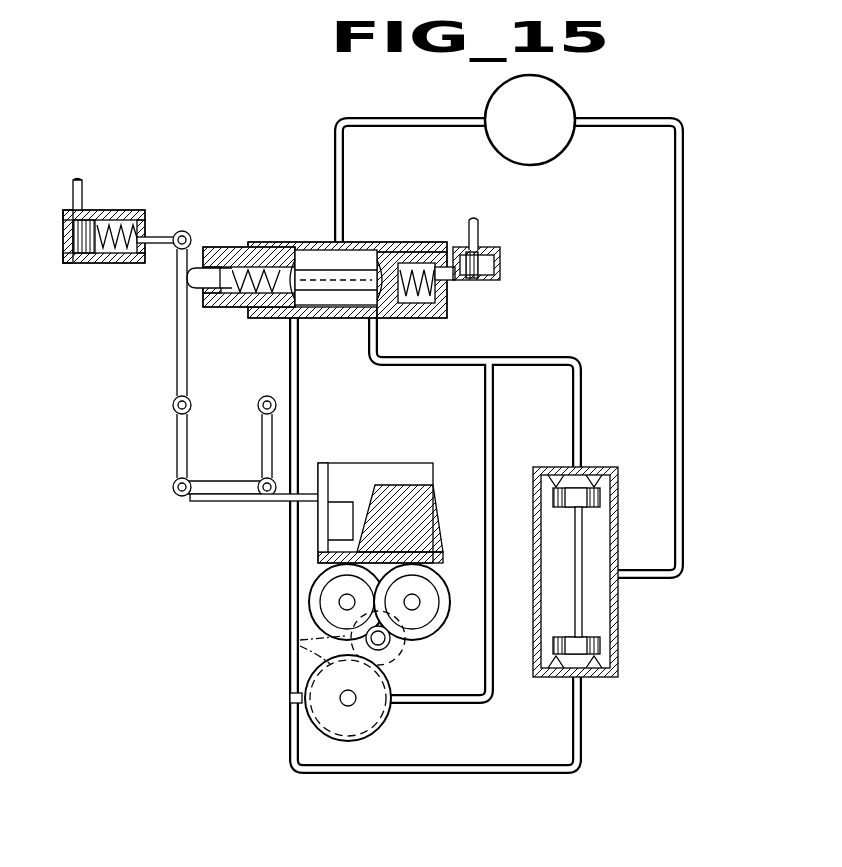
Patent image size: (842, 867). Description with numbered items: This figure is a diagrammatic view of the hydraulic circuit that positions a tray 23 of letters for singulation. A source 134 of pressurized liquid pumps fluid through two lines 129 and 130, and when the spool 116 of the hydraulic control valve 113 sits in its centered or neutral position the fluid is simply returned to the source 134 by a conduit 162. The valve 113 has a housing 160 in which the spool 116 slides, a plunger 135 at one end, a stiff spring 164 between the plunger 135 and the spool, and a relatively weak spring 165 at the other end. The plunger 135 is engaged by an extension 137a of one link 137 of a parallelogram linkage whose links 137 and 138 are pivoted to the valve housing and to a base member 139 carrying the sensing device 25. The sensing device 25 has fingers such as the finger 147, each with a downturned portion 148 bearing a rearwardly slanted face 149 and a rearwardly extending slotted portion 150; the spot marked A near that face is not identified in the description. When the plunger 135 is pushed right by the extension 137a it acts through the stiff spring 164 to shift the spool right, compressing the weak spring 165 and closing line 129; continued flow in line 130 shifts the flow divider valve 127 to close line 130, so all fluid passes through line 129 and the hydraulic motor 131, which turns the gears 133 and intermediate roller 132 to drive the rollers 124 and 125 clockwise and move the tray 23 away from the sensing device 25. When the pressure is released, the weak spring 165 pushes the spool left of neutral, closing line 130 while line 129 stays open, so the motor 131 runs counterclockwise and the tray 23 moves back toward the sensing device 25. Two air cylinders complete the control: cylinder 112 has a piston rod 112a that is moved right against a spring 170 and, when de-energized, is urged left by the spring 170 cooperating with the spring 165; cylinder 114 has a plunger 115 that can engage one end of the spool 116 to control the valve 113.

The conduit 162 is at (378, 117).
The source of pressurized liquid 134 is at (550, 128).
The air cylinder 112 is at (106, 212).
The piston rod 112a is at (164, 235).
The spring 170 is at (114, 252).
The link extension 137a is at (180, 326).
The hydraulic control valve 113 is at (268, 242).
The spool 116 is at (395, 310).
The weak spring 165 is at (416, 266).
The valve housing 160 is at (340, 318).
The stiff spring 164 is at (242, 290).
The plunger 135 is at (190, 282).
The air cylinder 114 is at (500, 273).
The plunger 115 is at (480, 246).
The hydraulic line 129 is at (300, 383).
The hydraulic line 130 is at (549, 360).
The link 137 is at (176, 443).
The link 138 is at (262, 443).
The base member 139 is at (178, 497).
The sensing device 25 is at (160, 487).
The rearwardly extending portion 150 is at (300, 504).
The tray 23 is at (351, 494).
The rearwardly slanted face 149 is at (396, 484).
The finger 147 is at (360, 493).
The downturned portion 148 is at (336, 540).
The point A is at (430, 498).
The roller 124 is at (312, 602).
The roller 125 is at (440, 618).
The intermediate roller 132 is at (392, 648).
The hydraulic motor 131 is at (320, 714).
The gears 133 is at (300, 643).
The flow divider valve 127 is at (618, 624).